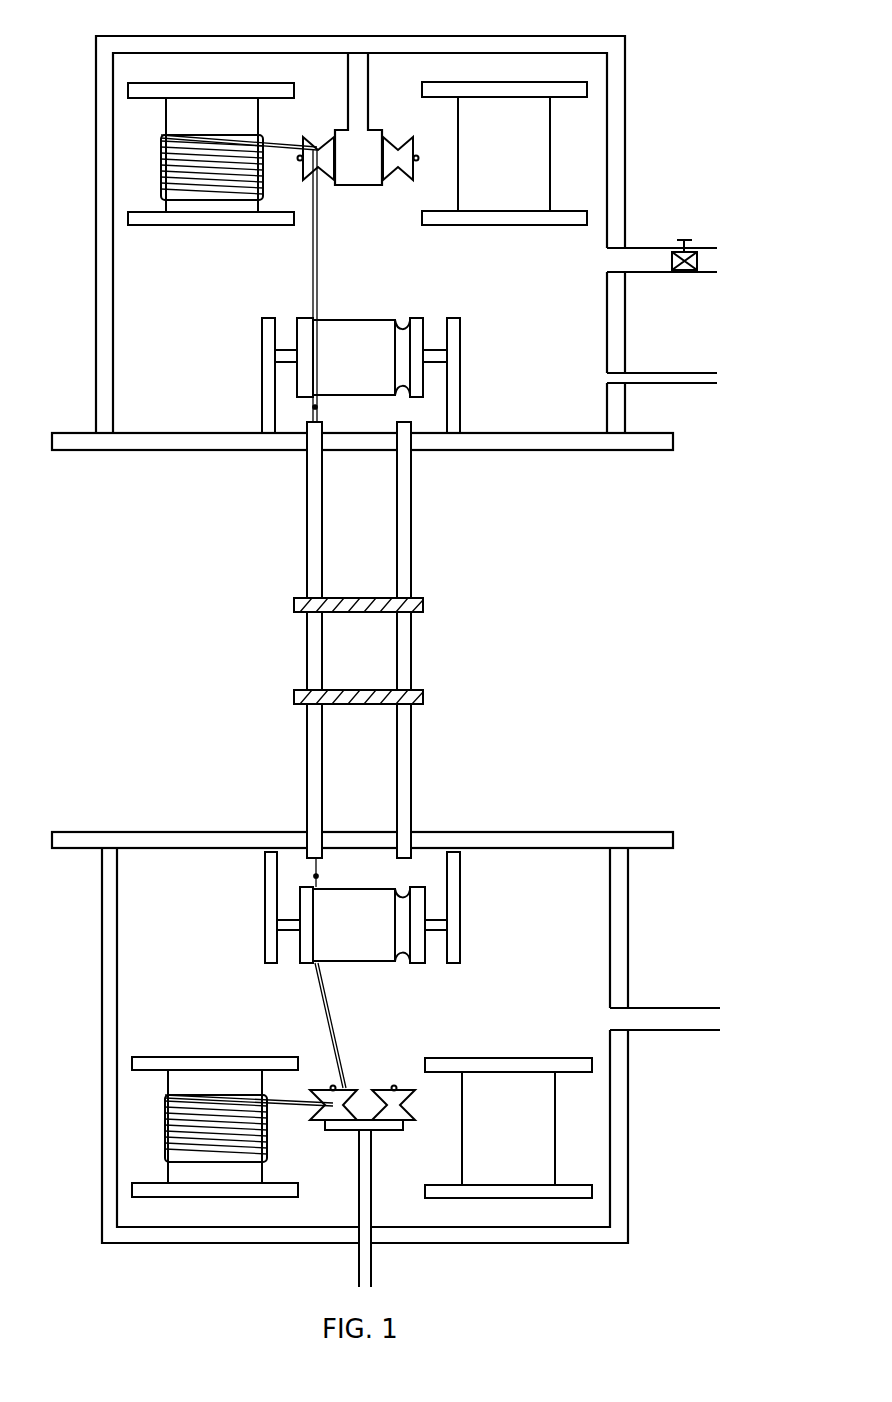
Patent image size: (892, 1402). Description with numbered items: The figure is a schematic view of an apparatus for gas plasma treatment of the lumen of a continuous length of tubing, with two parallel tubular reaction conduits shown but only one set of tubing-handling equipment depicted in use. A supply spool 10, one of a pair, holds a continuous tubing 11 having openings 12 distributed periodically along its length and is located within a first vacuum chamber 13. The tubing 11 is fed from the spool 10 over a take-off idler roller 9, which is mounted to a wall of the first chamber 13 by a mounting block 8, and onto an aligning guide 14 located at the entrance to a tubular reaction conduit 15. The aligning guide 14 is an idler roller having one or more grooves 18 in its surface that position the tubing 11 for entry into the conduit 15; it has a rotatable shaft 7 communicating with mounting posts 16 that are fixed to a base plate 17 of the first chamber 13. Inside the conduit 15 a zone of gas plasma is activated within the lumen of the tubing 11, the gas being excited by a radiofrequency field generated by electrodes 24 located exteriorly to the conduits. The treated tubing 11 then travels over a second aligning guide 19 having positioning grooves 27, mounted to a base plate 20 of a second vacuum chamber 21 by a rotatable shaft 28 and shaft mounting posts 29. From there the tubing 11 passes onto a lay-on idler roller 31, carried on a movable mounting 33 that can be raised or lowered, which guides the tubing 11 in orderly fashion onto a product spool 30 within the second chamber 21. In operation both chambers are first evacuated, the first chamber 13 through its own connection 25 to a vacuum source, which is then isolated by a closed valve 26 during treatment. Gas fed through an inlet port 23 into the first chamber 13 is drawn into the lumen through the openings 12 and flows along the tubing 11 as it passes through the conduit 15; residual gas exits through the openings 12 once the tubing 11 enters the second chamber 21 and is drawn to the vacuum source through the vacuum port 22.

The mounting block 8 is at (360, 64).
The take-off idler roller 9 is at (308, 146).
The supply spool 10 is at (206, 228).
The first vacuum chamber 13 is at (100, 244).
The tubing 11 is at (313, 272).
The aligning guide 14 is at (343, 318).
The grooves 18 is at (400, 318).
The rotatable shaft 7 is at (430, 356).
The mounting posts 16 is at (262, 403).
The openings 12 is at (317, 408).
The connection 25 is at (654, 248).
The valve 26 is at (688, 272).
The inlet port 23 is at (708, 383).
The base plate 17 is at (165, 450).
The tubular reaction conduit 15 is at (307, 492).
The electrodes 24 is at (423, 604).
The base plate 20 is at (164, 832).
The second vacuum chamber 21 is at (105, 946).
The shaft mounting posts 29 is at (265, 882).
The rotatable shaft 28 is at (440, 930).
The vacuum port 22 is at (690, 1006).
The second aligning guide 19 is at (352, 963).
The positioning grooves 27 is at (403, 963).
The product spool 30 is at (207, 1059).
The lay-on idler roller 31 is at (322, 1086).
The movable mounting 33 is at (372, 1154).